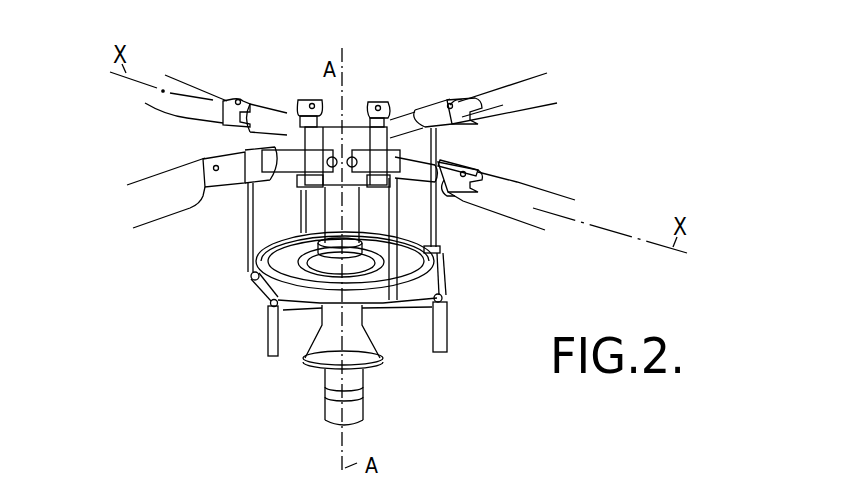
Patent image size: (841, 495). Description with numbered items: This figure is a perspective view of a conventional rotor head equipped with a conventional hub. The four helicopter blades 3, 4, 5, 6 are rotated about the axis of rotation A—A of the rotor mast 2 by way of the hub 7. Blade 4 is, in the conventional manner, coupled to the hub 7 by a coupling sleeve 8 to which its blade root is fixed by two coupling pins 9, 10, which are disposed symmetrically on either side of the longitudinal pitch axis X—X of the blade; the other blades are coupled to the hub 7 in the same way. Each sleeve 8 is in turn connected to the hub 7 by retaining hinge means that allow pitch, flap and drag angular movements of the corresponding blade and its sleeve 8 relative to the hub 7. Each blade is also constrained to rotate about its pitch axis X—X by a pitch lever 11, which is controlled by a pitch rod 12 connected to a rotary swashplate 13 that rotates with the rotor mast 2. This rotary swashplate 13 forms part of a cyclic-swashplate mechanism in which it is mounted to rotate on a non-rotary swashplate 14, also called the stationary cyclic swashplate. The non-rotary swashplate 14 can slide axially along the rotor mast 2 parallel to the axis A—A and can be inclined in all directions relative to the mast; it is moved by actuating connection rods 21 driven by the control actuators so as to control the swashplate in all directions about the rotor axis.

The rotor mast 2 is at (227, 237).
The helicopter blade 3 is at (515, 90).
The helicopter blade 4 is at (548, 203).
The helicopter blade 5 is at (157, 192).
The helicopter blade 6 is at (185, 92).
The hub 7 is at (351, 140).
The coupling sleeve 8 is at (453, 163).
The coupling pin 9 is at (463, 192).
The coupling pin 10 is at (480, 173).
The pitch lever 11 is at (409, 181).
The pitch rod 12 is at (434, 264).
The rotary swashplate 13 is at (268, 290).
The non-rotary swashplate 14 is at (373, 305).
The actuating connection rod 21 is at (447, 337).